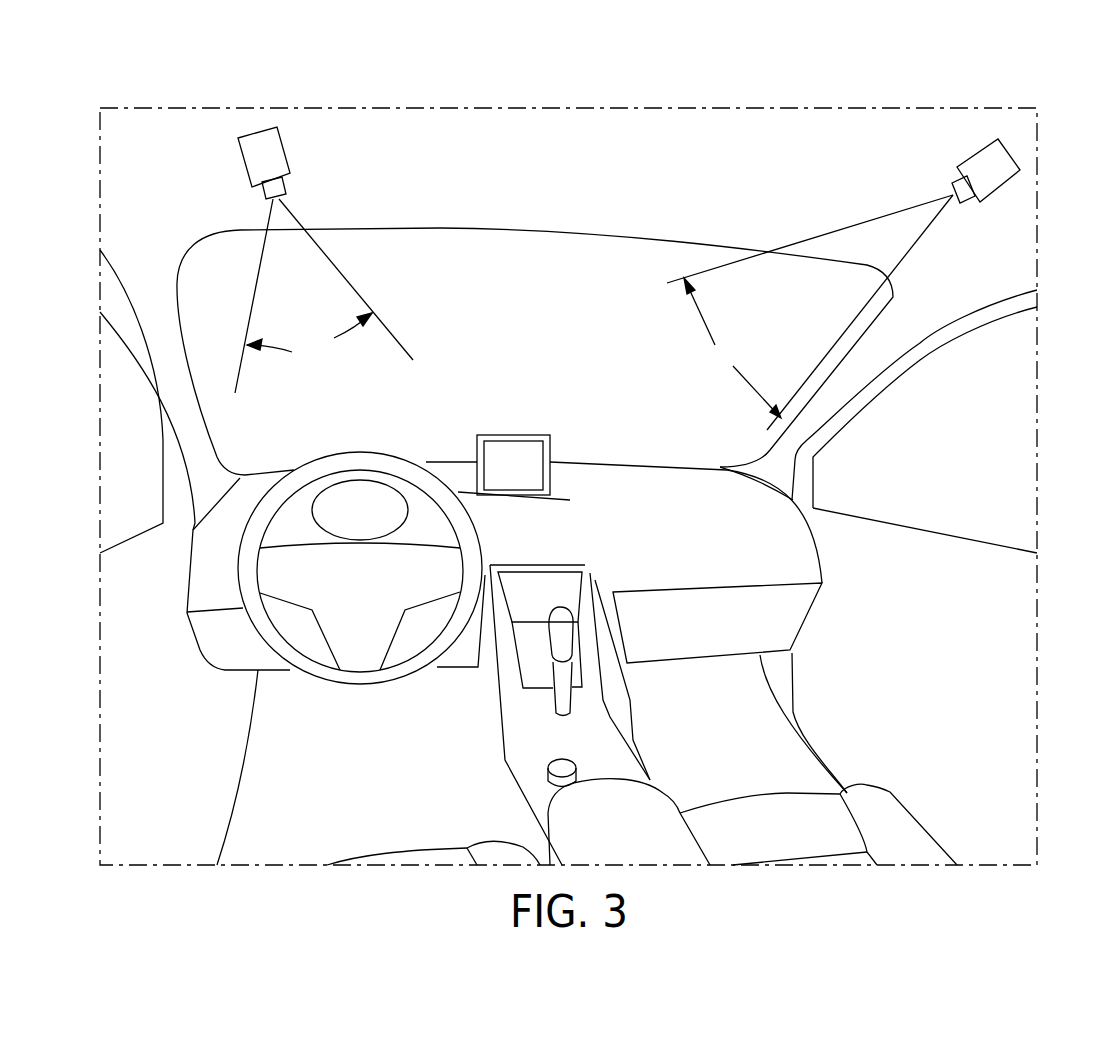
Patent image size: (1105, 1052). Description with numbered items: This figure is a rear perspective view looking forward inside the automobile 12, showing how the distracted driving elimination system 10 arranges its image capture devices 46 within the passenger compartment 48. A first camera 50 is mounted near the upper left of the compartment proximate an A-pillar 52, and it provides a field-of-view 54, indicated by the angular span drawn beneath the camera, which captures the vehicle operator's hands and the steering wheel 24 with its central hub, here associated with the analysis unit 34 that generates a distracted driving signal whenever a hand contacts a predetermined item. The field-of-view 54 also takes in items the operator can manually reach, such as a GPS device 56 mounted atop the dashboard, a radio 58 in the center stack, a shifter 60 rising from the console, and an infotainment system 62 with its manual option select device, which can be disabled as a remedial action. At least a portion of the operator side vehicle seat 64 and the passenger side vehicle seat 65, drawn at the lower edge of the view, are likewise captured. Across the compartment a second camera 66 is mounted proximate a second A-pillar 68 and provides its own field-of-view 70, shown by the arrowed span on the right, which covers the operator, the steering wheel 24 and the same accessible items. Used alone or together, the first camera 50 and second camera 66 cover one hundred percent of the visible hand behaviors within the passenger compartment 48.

The distracted driving elimination system 10 is at (804, 77).
The automobile 12 is at (1020, 623).
The steering wheel 24 is at (388, 465).
The analysis unit 34 is at (355, 508).
The image capture devices 46 is at (553, 108).
The passenger compartment 48 is at (335, 138).
The first camera 50 is at (262, 145).
The A-pillar 52 is at (160, 317).
The field-of-view 54 is at (309, 336).
The GPS device 56 is at (527, 453).
The radio 58 is at (525, 640).
The shifter 60 is at (567, 630).
The infotainment system option select device 62 is at (558, 770).
The operator side vehicle seat 64 is at (432, 857).
The passenger side vehicle seat 65 is at (777, 808).
The second camera 66 is at (995, 165).
The second A-pillar 68 is at (943, 310).
The field-of-view 70 is at (732, 348).